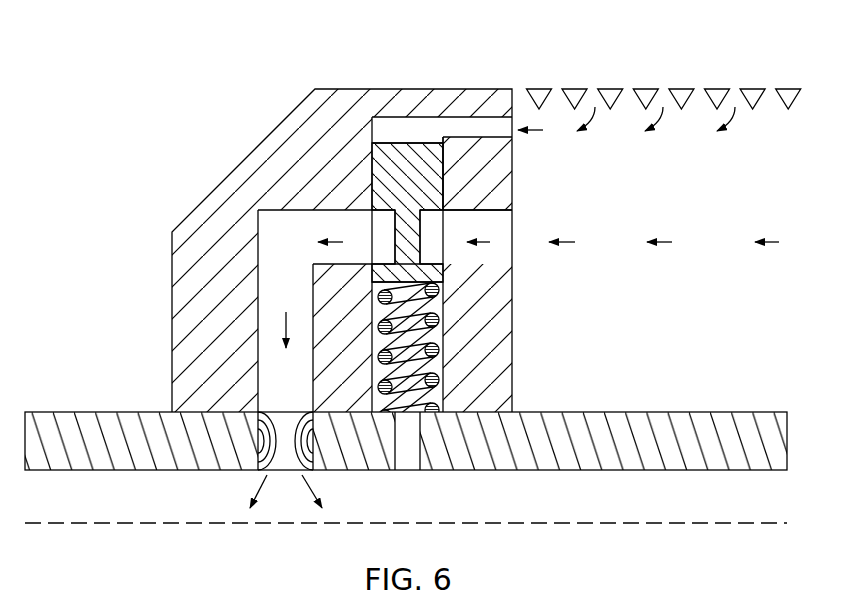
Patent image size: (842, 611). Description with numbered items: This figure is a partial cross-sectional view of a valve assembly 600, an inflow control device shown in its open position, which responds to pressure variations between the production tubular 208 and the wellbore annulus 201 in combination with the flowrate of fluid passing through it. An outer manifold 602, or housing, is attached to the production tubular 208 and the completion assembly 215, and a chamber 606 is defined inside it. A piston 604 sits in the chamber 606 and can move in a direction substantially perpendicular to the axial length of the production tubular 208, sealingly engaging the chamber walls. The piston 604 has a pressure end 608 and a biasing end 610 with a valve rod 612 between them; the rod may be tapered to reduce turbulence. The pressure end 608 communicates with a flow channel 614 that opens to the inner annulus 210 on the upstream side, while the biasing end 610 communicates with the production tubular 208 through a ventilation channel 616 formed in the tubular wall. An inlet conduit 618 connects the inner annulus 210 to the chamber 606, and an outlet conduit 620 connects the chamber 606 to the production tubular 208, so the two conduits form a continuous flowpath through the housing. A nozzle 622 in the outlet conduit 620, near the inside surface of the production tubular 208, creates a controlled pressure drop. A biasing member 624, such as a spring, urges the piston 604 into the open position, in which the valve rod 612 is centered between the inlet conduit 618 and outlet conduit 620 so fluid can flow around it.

The valve assembly 600 is at (353, 231).
The outer manifold 602 is at (335, 108).
The piston 604 is at (398, 186).
The chamber 606 is at (444, 353).
The pressure end 608 is at (401, 142).
The biasing end 610 is at (378, 300).
The valve rod 612 is at (408, 250).
The flow channel 614 is at (474, 128).
The ventilation channel 616 is at (407, 458).
The inlet conduit 618 is at (483, 222).
The outlet conduit 620 is at (272, 261).
The nozzle 622 is at (308, 448).
The biasing member 624 is at (440, 405).
The production tubular 208 is at (102, 460).
The inner annulus 210 is at (690, 337).
The wellbore annulus 201 is at (742, 41).
The completion assembly 215 is at (682, 88).